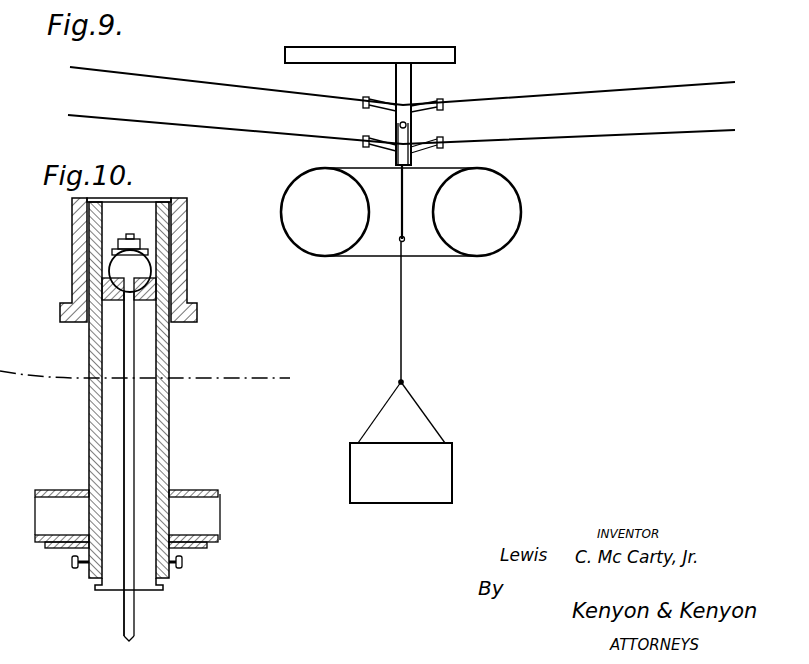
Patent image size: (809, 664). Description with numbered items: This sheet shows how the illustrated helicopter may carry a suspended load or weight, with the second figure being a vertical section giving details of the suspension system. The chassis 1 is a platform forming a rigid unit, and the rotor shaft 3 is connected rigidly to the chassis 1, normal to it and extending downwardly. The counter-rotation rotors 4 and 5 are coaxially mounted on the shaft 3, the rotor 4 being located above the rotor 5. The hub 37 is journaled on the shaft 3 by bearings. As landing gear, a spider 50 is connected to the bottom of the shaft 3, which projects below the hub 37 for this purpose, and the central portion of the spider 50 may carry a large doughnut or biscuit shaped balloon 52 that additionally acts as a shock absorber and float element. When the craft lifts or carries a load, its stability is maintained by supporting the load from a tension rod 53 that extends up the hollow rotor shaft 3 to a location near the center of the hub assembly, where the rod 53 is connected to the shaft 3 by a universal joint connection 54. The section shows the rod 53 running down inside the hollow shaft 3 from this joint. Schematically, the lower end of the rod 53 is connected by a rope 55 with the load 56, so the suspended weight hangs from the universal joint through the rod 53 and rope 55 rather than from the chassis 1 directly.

In FIG. 9, the chassis 1 is at (455, 54).
In FIG. 9, the rotor shaft 3 is at (405, 80).
In FIG. 10, the rotor shaft 3 is at (89, 352).
In FIG. 9, the rotor 4 is at (572, 92).
In FIG. 9, the rotor 5 is at (572, 135).
In FIG. 10, the rotor 5 is at (215, 378).
In FIG. 10, the hub 37 is at (73, 288).
In FIG. 10, the spider 50 is at (205, 518).
In FIG. 9, the doughnut or biscuit shaped balloon 52 is at (521, 212).
In FIG. 9, the tension rod 53 is at (402, 192).
In FIG. 10, the tension rod 53 is at (127, 413).
In FIG. 10, the universal joint connection 54 is at (112, 260).
In FIG. 9, the rope 55 is at (401, 323).
In FIG. 9, the load 56 is at (445, 457).